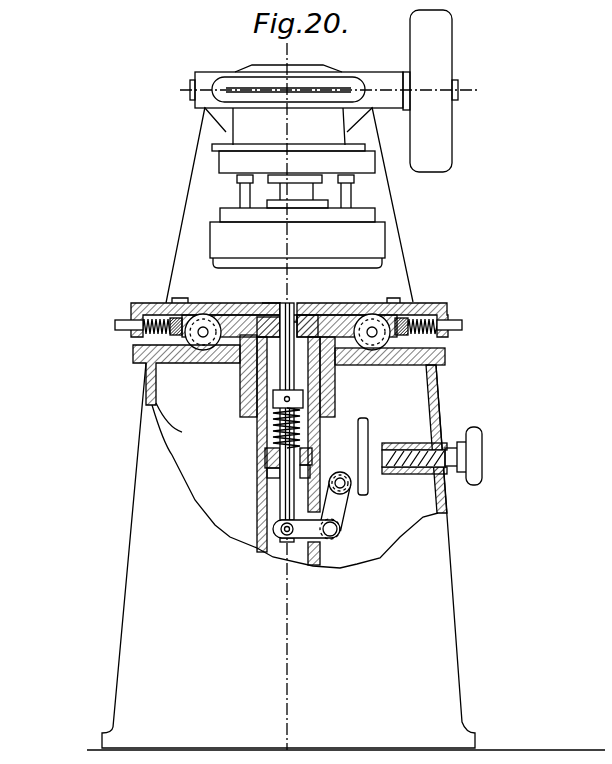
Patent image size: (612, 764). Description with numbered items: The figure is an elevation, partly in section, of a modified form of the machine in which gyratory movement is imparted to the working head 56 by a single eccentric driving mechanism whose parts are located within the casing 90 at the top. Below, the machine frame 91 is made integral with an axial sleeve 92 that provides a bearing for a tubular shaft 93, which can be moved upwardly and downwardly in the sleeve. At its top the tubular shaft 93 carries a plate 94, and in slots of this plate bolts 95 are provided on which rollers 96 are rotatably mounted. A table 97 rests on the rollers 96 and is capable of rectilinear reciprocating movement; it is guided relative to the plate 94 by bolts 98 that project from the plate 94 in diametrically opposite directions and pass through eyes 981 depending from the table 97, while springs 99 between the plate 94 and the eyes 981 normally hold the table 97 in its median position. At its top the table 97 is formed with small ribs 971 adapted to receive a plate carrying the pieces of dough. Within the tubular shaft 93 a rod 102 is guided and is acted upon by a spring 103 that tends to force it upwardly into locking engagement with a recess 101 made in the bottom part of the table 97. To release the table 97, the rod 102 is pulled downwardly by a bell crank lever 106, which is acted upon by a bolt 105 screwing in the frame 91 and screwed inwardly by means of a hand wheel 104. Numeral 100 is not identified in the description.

The casing 90 is at (248, 124).
The working head 56 is at (357, 238).
The small ribs 971 is at (167, 301).
The bolts 95 is at (163, 302).
The rollers 96 is at (207, 322).
The table 97 is at (446, 305).
The bolts 98 is at (123, 325).
The eyes 981 is at (150, 335).
The springs 99 is at (157, 333).
The plate slot 100 is at (262, 302).
The recess 101 is at (303, 302).
The plate 94 is at (335, 333).
The axial sleeve 92 is at (335, 397).
The rod 102 is at (241, 397).
The tubular shaft 93 is at (258, 430).
The spring 103 is at (275, 443).
The machine frame 91 is at (438, 422).
The hand wheel 104 is at (481, 458).
The bolt 105 is at (415, 460).
The bell crank lever 106 is at (333, 503).